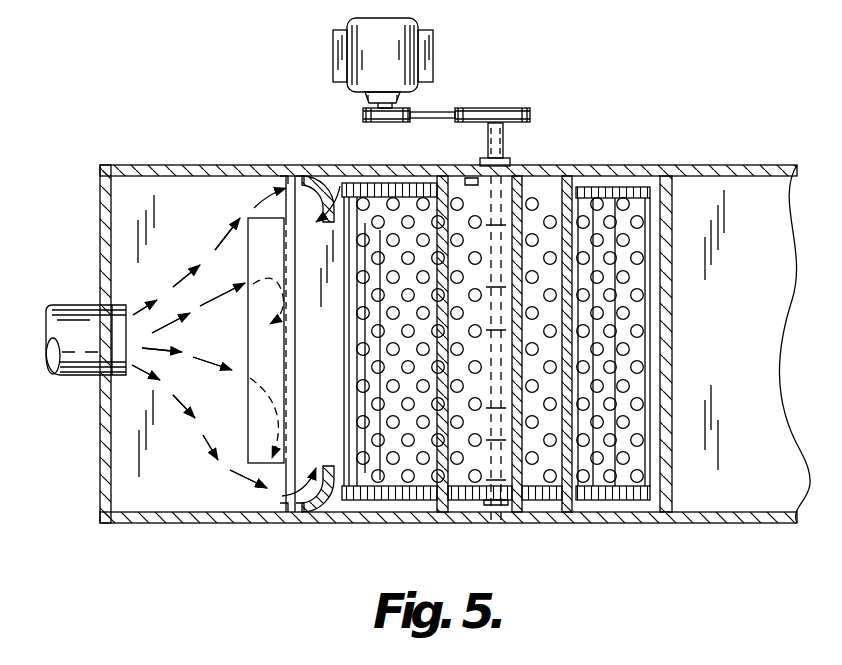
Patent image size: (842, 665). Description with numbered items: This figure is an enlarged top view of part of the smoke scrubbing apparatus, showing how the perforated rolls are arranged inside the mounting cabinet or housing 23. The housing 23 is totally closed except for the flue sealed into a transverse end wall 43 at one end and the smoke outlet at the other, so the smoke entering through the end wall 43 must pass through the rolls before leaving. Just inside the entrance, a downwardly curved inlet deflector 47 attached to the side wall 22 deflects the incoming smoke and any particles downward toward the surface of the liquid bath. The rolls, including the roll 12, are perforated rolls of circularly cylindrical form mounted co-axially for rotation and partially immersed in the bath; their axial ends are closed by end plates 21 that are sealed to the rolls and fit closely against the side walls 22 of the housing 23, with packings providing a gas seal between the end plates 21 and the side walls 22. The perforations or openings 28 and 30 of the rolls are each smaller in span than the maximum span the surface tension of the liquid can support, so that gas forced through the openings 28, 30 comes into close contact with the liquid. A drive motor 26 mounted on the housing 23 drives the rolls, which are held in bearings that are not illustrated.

The roll 12 is at (383, 203).
The end plate 21 is at (614, 190).
The side wall 22 is at (334, 165).
The mounting cabinet or housing 23 is at (574, 151).
The drive motor 26 is at (418, 68).
The perforations or openings 28 is at (478, 480).
The perforations or openings 30 is at (457, 203).
The transverse end wall 43 is at (100, 238).
The inlet deflector 47 is at (246, 340).